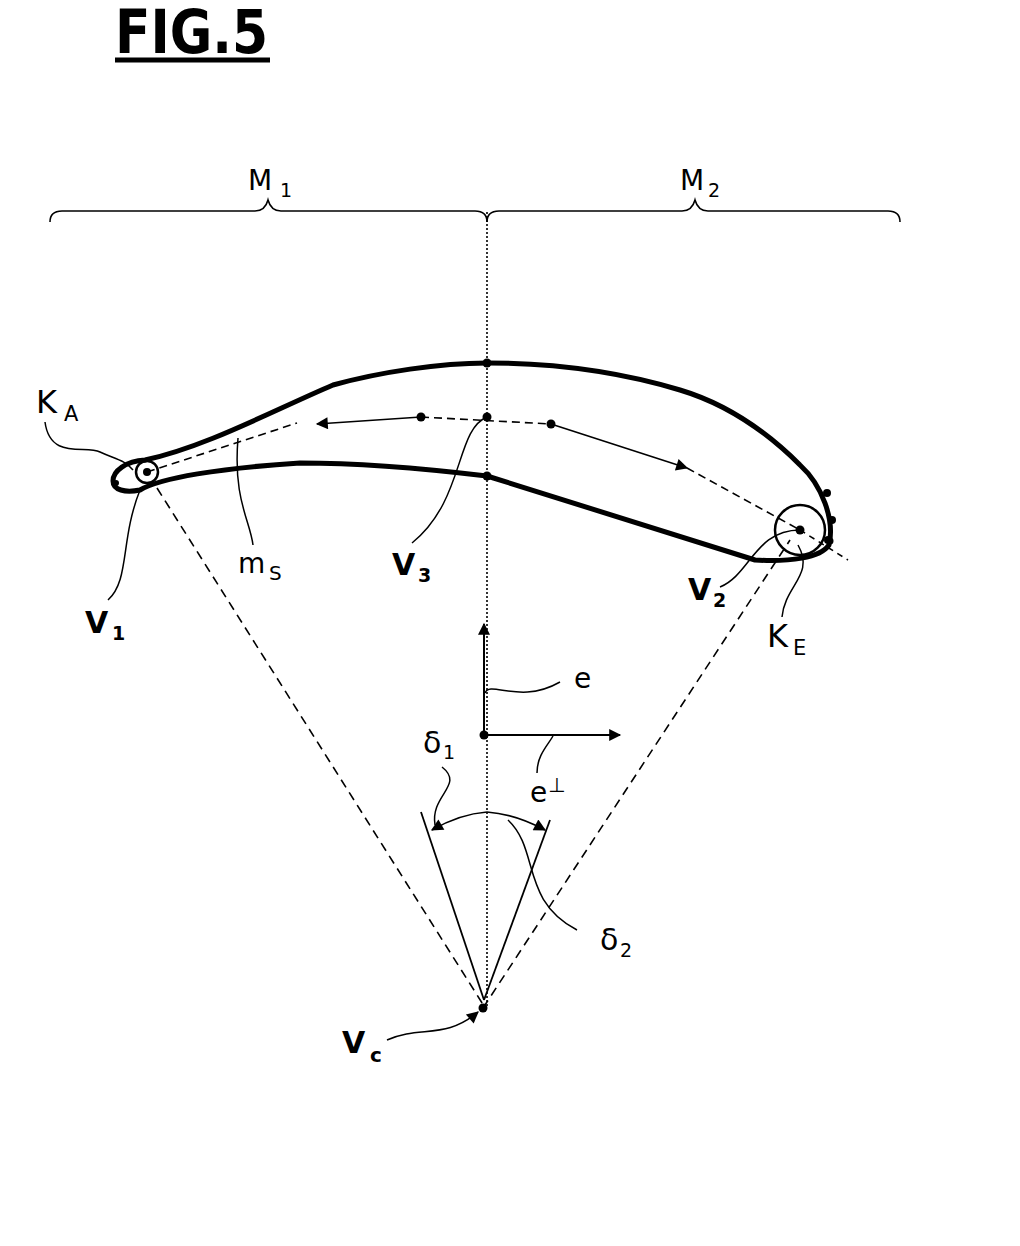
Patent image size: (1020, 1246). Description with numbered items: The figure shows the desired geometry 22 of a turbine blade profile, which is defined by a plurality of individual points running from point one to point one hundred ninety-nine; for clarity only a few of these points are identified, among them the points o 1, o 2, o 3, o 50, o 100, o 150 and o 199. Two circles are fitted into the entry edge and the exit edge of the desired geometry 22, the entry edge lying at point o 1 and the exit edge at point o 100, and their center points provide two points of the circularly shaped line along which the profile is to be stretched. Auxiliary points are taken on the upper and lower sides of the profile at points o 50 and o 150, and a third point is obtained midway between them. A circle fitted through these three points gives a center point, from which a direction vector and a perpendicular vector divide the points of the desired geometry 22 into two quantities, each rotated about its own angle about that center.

The desired geometry 22 is at (742, 415).
The point o50 (H2) on suction side 50 is at (487, 363).
The point o150 (H1) on pressure side 150 is at (487, 476).
The point o100 at leading edge 100 is at (118, 490).
The point o199 at trailing edge 199 is at (826, 548).
The point o1 at trailing edge 1 is at (830, 540).
The point o2 at trailing edge 2 is at (832, 520).
The point o3 at trailing edge 3 is at (843, 490).